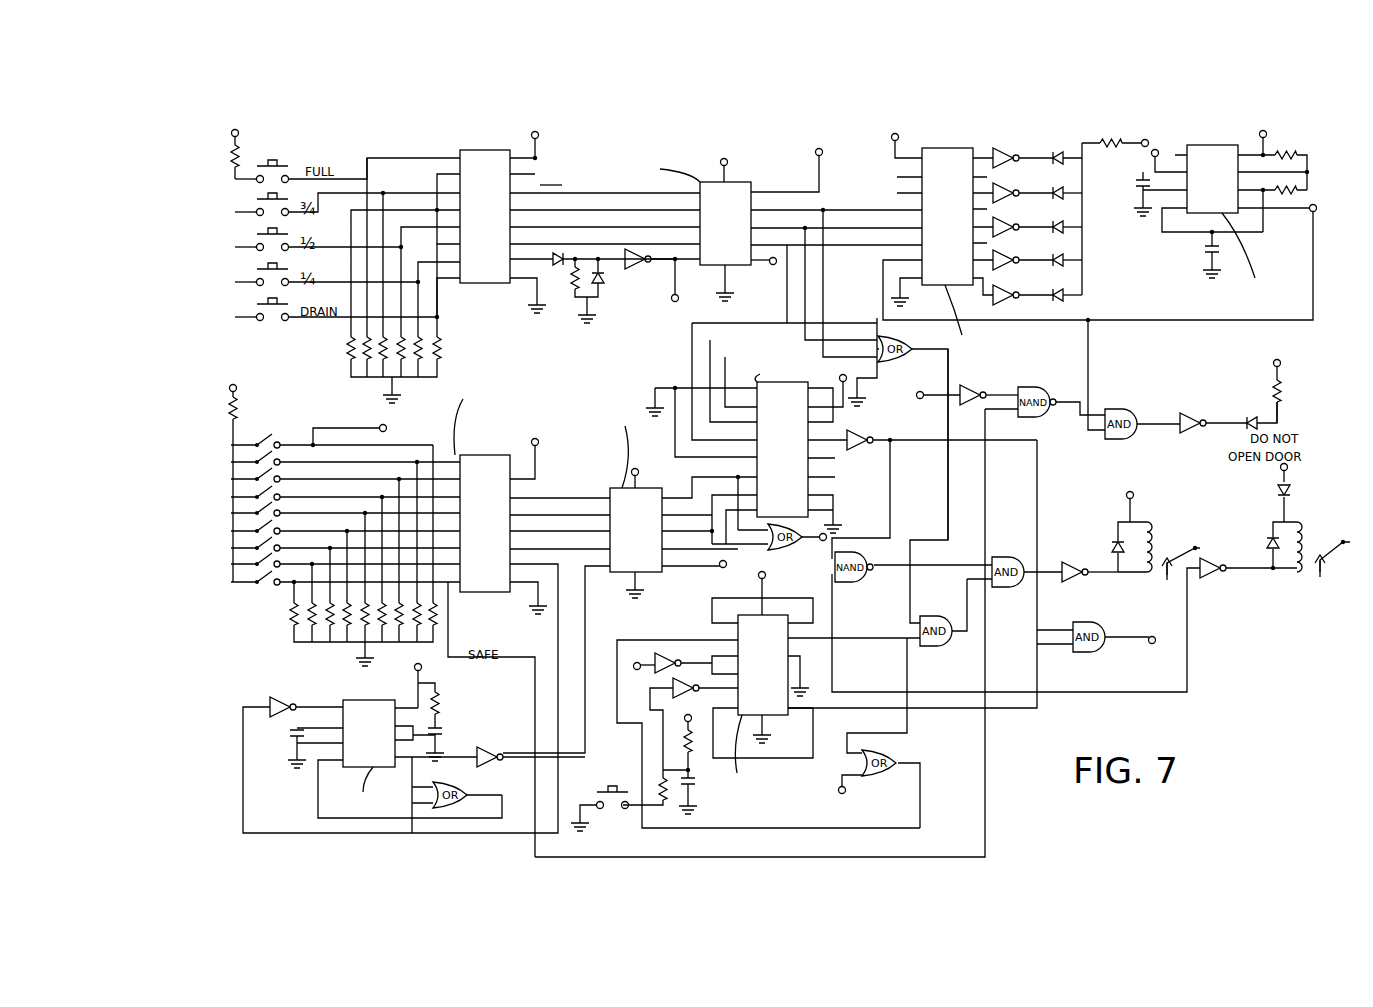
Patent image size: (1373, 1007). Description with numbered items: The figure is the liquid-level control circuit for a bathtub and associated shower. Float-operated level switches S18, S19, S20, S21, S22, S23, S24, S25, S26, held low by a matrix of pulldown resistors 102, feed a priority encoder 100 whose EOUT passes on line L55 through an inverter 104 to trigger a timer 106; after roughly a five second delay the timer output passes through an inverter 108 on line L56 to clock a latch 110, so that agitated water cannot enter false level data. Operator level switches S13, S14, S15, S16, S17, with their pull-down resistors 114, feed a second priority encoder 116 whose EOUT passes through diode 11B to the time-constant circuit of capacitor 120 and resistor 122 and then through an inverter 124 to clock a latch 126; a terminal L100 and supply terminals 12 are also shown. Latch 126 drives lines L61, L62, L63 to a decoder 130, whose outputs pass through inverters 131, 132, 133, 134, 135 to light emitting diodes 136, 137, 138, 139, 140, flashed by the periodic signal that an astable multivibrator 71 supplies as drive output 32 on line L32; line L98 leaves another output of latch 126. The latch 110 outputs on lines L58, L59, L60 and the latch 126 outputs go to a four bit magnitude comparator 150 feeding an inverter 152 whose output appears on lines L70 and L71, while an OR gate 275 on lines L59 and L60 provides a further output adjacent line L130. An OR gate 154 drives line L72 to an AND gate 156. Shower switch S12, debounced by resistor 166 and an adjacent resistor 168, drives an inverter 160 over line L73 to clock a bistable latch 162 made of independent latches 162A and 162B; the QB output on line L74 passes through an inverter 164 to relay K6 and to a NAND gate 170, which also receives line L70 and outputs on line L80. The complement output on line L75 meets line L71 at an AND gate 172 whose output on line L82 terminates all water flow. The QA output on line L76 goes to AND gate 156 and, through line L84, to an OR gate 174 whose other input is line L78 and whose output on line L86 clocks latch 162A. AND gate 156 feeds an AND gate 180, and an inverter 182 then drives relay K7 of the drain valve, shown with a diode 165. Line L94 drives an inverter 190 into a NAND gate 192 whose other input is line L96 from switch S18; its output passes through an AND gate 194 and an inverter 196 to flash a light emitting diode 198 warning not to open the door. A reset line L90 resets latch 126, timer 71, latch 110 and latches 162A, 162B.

The switch 12 is at (235, 133).
The level selection switch S17 is at (290, 158).
The level selection switch S16 is at (257, 198).
The level selection switch S15 is at (257, 233).
The level selection switch S14 is at (257, 268).
The drain selection switch S13 is at (257, 303).
The priority encoder 116 is at (487, 150).
The diode 11B is at (556, 266).
The pull-down resistors 114 is at (354, 357).
The resistor 122 is at (572, 286).
The capacitor 120 is at (600, 282).
The inverter 124 is at (651, 267).
The line L100 is at (766, 348).
The latch 126 is at (752, 182).
The line L98 is at (845, 148).
The line L61 is at (836, 275).
The line L62 is at (816, 317).
The line L63 is at (823, 318).
The reset line L90 is at (777, 262).
The decoder 130 is at (931, 150).
The inverter 131 is at (1006, 154).
The inverter 132 is at (999, 188).
The inverter 133 is at (999, 222).
The inverter 134 is at (999, 256).
The inverter 135 is at (1000, 291).
The light emitting diode 136 is at (1058, 152).
The light emitting diode 137 is at (1070, 191).
The light emitting diode 138 is at (1073, 224).
The light emitting diode 139 is at (1073, 257).
The light emitting diode 140 is at (1073, 292).
The astable multivibrator 71 is at (1202, 146).
The drive output 32 is at (1317, 210).
The line L32 is at (1195, 321).
The OR gate 154 is at (897, 323).
The four bit magnitude comparator 150 is at (808, 470).
The inverter 152 is at (855, 430).
The line L70 is at (890, 450).
The line L71 is at (1037, 492).
The line L72 is at (947, 510).
The line L94 is at (933, 382).
The inverter 190 is at (965, 385).
The NAND gate 192 is at (1062, 371).
The AND gate 194 is at (1105, 409).
The inverter 196 is at (1182, 433).
The light emitting diode 198 is at (1252, 415).
The OR gate 275 is at (766, 549).
The line L130 is at (827, 537).
The latch 110 is at (620, 488).
The line L60 is at (709, 502).
The line L59 is at (698, 532).
The line L58 is at (698, 550).
The line L56 is at (588, 640).
The bistable latch 162 is at (780, 594).
The bistable latch 162A is at (738, 627).
The bistable latch 162B is at (790, 712).
The AND gate 180 is at (665, 652).
The inverter 160 is at (673, 688).
The line L73 is at (642, 733).
The resistor 168 is at (668, 795).
The resistor 166 is at (692, 750).
The shower switch S12 is at (608, 813).
The line L86 is at (797, 830).
The NAND gate 170 is at (1016, 622).
The line L76 is at (887, 638).
The line L84 is at (907, 692).
The line L74 is at (886, 694).
The line L75 is at (959, 712).
The AND gate 156 is at (966, 611).
The line L80 is at (923, 566).
The inverter 182 is at (1080, 560).
The AND gate 172 is at (1080, 632).
The line L82 is at (1108, 640).
The OR gate 174 is at (895, 755).
The line L78 is at (845, 793).
The line L96 is at (985, 800).
The inverter 164 is at (1212, 562).
The relay K7 is at (1155, 543).
The relay K6 is at (1301, 539).
The diode 165 is at (1278, 490).
The level sensing switch S26 is at (231, 438).
The level sensing switch S25 is at (231, 455).
The level sensing switch S24 is at (231, 472).
The level sensing switch S23 is at (231, 490).
The level sensing switch S22 is at (231, 506).
The level sensing switch S21 is at (231, 524).
The level sensing switch S20 is at (231, 541).
The level sensing switch S19 is at (231, 557).
The level sensing switch S18 is at (231, 575).
The pulldown resistors 102 is at (295, 651).
The priority encoder 100 is at (503, 440).
The line L55 is at (558, 628).
The inverter 104 is at (272, 699).
The timer 106 is at (357, 700).
The inverter 108 is at (472, 747).